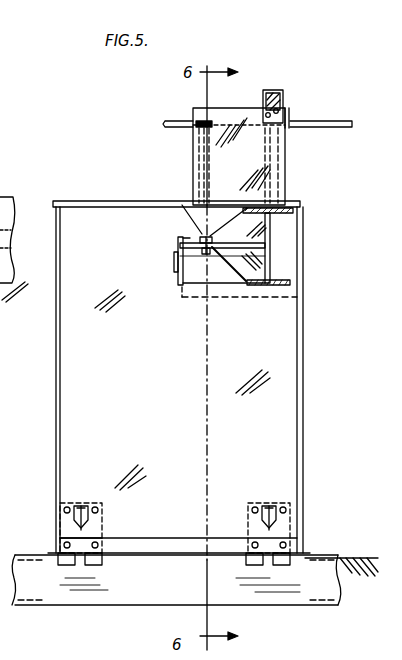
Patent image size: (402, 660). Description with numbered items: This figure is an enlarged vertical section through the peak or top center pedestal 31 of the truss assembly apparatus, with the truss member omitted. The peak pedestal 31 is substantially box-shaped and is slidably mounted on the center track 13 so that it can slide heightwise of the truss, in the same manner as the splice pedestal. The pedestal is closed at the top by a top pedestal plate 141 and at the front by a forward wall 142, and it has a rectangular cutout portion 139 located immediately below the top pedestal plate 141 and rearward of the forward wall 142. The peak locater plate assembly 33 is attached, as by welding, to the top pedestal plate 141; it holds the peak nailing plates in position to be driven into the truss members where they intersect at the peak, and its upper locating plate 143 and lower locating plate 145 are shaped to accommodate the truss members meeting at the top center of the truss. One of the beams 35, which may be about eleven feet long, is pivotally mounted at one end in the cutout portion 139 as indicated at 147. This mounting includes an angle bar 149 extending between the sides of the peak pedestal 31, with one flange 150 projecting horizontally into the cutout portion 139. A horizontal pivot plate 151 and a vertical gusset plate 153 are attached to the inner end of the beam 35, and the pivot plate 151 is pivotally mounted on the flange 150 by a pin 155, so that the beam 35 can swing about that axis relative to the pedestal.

The center track 13 is at (308, 558).
The peak pedestal 31 is at (52, 408).
The peak locater plate assembly 33 is at (193, 167).
The beam 35 is at (291, 212).
The rectangular cutout portion 139 is at (178, 270).
The top pedestal plate 141 is at (126, 202).
The forward wall 142 is at (303, 310).
The upper locating plate 143 is at (318, 121).
The lower locating plate 145 is at (167, 121).
The pivotal mounting 147 is at (195, 234).
The angle bar 149 is at (175, 252).
The flange 150 is at (183, 244).
The horizontal pivot plate 151 is at (274, 244).
The vertical gusset plate 153 is at (240, 232).
The pin 155 is at (198, 230).